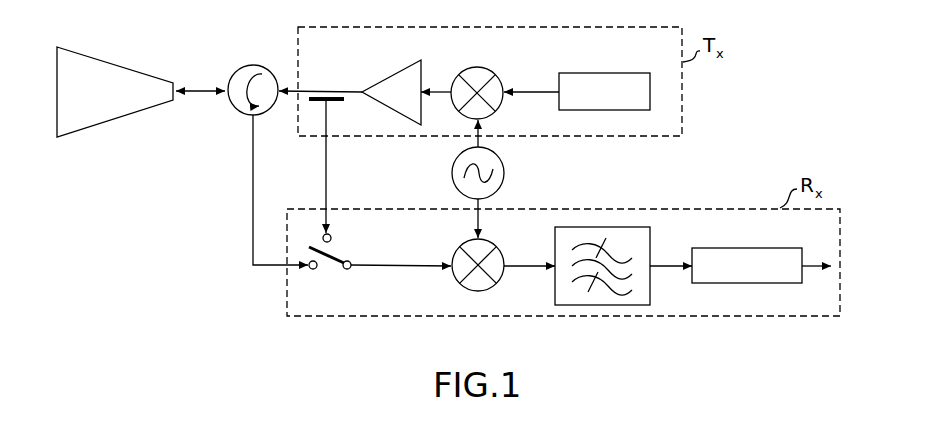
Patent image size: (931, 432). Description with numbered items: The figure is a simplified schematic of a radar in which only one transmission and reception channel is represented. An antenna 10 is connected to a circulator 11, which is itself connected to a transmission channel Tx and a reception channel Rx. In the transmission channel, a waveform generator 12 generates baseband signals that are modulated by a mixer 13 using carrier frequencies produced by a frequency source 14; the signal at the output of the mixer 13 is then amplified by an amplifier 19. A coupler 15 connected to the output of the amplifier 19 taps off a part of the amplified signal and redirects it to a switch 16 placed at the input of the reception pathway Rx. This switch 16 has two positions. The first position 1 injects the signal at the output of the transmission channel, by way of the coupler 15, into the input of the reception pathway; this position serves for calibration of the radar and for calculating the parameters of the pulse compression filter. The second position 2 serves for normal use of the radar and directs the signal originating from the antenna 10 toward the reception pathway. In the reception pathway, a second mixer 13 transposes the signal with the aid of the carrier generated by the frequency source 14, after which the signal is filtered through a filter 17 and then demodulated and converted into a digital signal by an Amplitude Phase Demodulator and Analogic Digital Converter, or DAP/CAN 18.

The antenna 10 is at (137, 66).
The circulator 11 is at (259, 65).
The waveform generator 12 is at (612, 73).
The mixer 13 is at (505, 76).
The frequency source 14 is at (503, 185).
The coupler 15 is at (341, 104).
The switch 16 is at (354, 254).
The filter 17 is at (652, 240).
The Amplitude Phase Demodulator and Analogic Digital Converter (DAP/CAN) 18 is at (748, 249).
The amplifier 19 is at (390, 72).
The first position 1 is at (338, 240).
The second position 2 is at (303, 284).